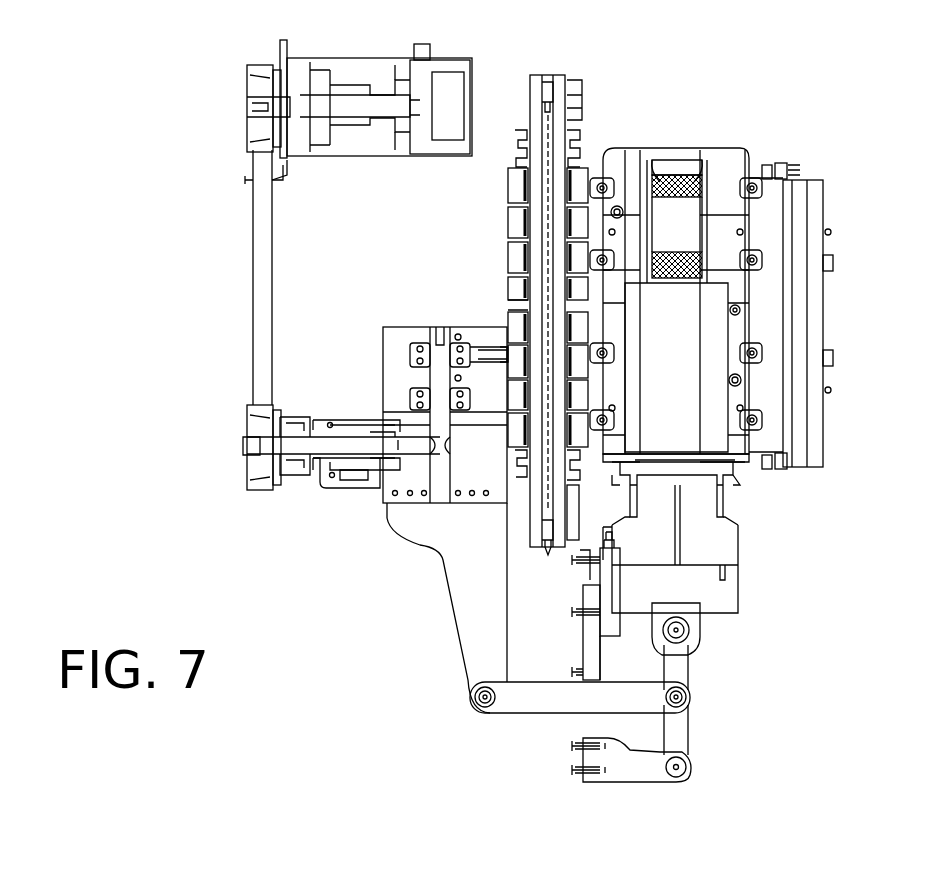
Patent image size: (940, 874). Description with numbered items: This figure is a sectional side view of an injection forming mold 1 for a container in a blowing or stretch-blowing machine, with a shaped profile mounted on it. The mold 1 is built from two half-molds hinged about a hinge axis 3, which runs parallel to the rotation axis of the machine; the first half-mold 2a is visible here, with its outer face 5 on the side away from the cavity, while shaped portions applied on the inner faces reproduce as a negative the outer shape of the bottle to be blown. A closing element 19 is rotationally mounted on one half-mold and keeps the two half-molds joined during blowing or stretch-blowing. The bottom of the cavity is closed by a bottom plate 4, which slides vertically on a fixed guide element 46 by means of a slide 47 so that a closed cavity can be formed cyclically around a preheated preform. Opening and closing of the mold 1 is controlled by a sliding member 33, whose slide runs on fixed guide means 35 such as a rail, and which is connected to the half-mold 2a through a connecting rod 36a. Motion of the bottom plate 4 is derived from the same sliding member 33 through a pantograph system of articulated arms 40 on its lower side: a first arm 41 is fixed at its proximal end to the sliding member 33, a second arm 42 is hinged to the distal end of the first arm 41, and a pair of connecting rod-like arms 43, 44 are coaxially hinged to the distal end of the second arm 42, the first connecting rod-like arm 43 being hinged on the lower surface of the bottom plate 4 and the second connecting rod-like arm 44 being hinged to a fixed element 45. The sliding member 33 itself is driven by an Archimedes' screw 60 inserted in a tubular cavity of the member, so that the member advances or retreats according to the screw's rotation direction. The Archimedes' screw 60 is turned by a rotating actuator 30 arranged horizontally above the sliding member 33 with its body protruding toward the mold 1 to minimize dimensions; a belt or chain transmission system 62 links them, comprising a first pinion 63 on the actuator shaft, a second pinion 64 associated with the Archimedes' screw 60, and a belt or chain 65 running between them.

The injection forming mold 1 is at (728, 82).
The first half-mold 2a is at (735, 158).
The hinge axis 3 is at (548, 75).
The bottom plate 4 is at (732, 598).
The outer face 5 is at (680, 215).
The closing element 19 is at (820, 315).
The rotating actuator 30 is at (356, 58).
The sliding member 33 is at (406, 335).
The guide means 35 is at (347, 475).
The connecting rod 36a is at (484, 345).
The system of articulated arms 40 is at (438, 680).
The first arm 41 is at (462, 580).
The second arm 42 is at (535, 697).
The first connecting rod-like arm 43 is at (688, 660).
The second connecting rod-like arm 44 is at (688, 728).
The fixed element 45 is at (635, 758).
The guide element 46 is at (600, 653).
The slide 47 is at (607, 598).
The Archimedes' screw 60 is at (326, 440).
The belt or chain transmission system 62 is at (233, 262).
The first pinion 63 is at (262, 90).
The second pinion 64 is at (258, 438).
The belt or chain 65 is at (272, 255).